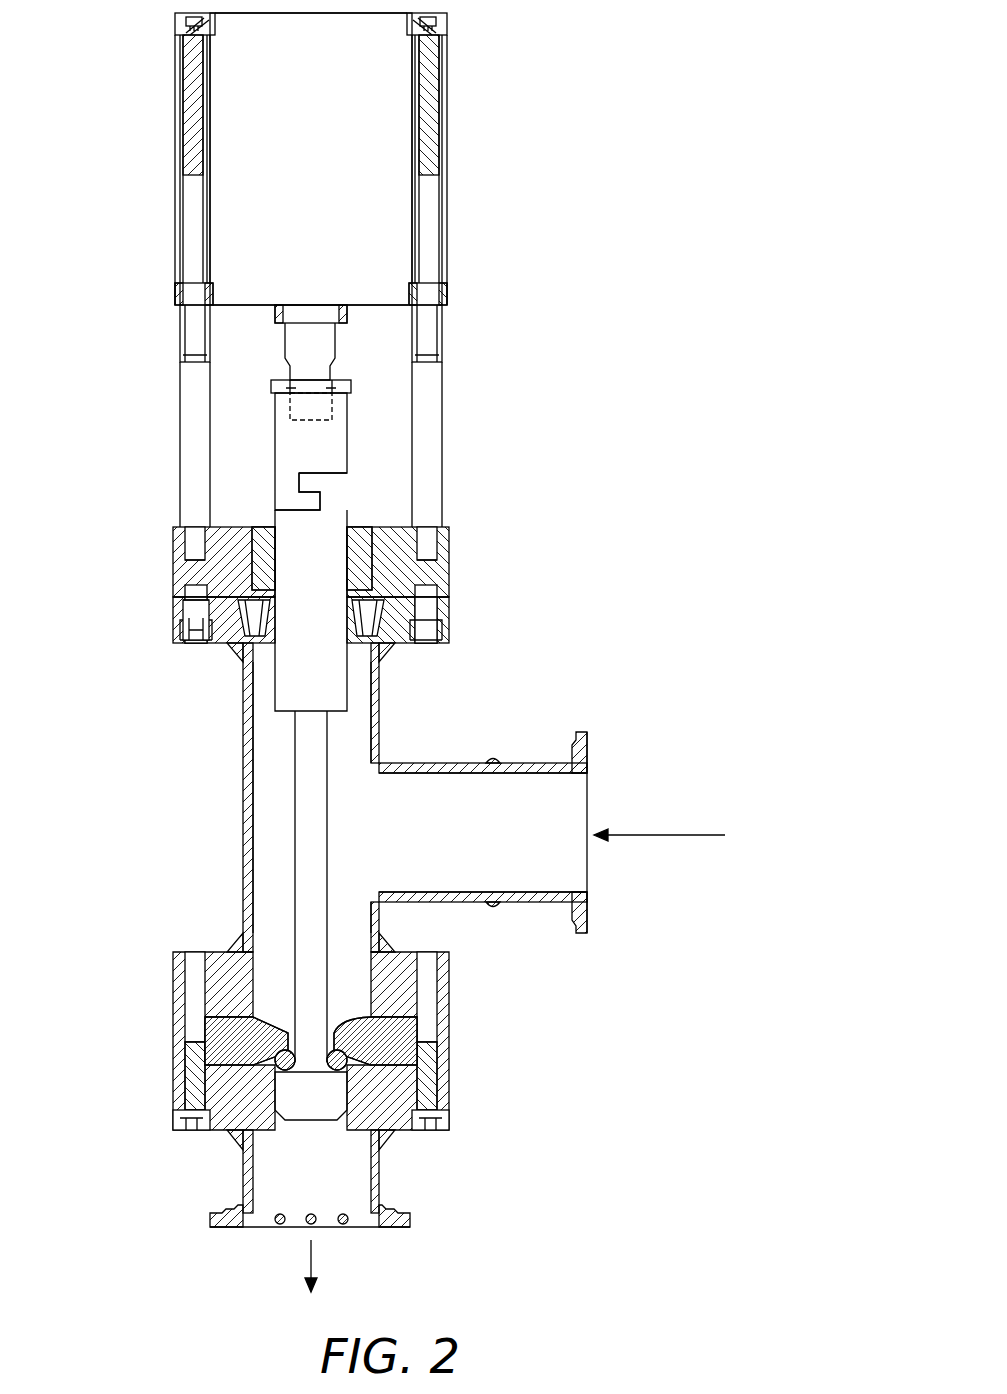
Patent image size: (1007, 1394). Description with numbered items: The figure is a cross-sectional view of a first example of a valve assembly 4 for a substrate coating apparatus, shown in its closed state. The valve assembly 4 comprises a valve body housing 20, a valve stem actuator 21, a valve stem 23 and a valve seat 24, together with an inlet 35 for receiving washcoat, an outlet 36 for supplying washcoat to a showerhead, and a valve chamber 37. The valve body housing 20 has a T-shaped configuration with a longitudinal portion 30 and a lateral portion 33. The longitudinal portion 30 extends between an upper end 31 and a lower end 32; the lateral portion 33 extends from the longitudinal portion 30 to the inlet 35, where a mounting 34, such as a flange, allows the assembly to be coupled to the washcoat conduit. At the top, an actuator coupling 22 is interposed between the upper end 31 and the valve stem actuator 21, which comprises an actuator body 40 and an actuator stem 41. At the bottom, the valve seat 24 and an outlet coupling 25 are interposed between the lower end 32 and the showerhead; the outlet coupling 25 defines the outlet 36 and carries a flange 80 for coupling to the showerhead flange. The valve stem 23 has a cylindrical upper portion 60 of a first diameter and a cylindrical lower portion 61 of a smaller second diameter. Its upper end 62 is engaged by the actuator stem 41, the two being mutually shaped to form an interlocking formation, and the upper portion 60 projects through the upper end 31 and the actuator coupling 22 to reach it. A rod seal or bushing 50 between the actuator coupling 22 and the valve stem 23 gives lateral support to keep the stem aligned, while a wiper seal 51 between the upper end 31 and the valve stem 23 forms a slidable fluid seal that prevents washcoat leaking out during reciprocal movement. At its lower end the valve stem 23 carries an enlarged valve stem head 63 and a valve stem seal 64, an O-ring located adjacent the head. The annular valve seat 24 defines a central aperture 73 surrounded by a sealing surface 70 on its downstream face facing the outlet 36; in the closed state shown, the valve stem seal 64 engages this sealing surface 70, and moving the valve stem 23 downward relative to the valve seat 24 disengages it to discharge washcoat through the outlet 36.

The valve assembly 4 is at (546, 345).
The valve body housing 20 is at (242, 885).
The valve stem actuator 21 is at (150, 238).
The actuator coupling 22 is at (415, 570).
The valve stem 23 is at (282, 720).
The valve seat 24 is at (276, 1035).
The outlet coupling 25 is at (222, 1130).
The longitudinal portion 30 is at (246, 800).
The upper end 31 is at (210, 603).
The lower end 32 is at (225, 989).
The lateral portion 33 is at (540, 762).
The mounting 34 is at (592, 732).
The inlet 35 is at (596, 790).
The outlet 36 is at (270, 1240).
The valve chamber 37 is at (350, 835).
The actuator body 40 is at (327, 172).
The actuator stem 41 is at (288, 437).
The rod seal or bushing 50 is at (362, 552).
The wiper seal 51 is at (360, 605).
The upper portion 60 is at (298, 681).
The lower portion 61 is at (300, 833).
The upper end 62 is at (335, 480).
The enlarged valve stem head 63 is at (310, 1125).
The valve stem seal 64 is at (345, 1058).
The sealing surface 70 is at (347, 1068).
The aperture 73 is at (370, 998).
The flange 80 is at (412, 1226).